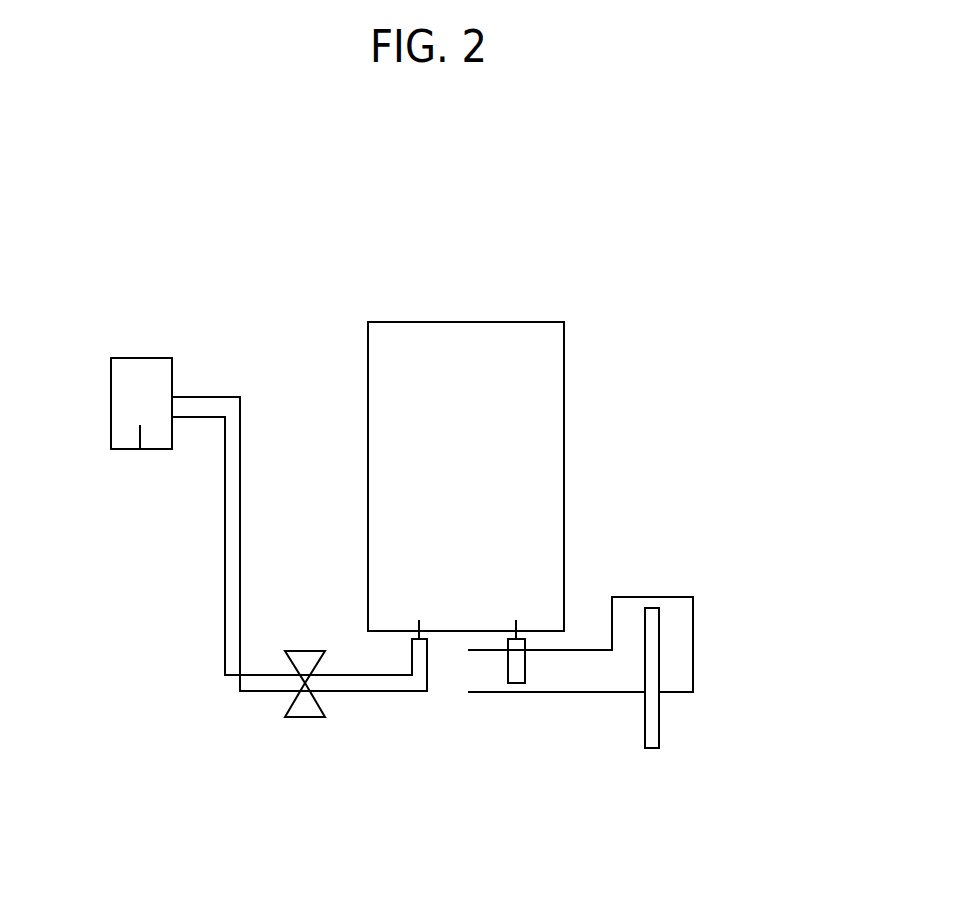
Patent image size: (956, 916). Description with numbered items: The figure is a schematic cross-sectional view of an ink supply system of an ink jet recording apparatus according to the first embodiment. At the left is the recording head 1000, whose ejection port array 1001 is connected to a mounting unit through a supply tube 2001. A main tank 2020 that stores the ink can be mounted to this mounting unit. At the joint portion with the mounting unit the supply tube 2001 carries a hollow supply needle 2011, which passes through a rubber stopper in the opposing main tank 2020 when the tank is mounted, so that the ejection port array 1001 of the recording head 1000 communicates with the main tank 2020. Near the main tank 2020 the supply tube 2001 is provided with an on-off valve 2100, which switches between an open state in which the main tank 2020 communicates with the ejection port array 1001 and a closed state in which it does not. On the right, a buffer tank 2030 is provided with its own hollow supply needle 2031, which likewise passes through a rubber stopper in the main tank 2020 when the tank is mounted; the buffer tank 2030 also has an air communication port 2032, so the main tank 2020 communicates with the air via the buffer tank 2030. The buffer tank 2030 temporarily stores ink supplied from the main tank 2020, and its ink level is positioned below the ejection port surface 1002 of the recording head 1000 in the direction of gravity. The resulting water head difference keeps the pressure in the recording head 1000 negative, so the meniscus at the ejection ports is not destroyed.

The recording head 1000 is at (138, 357).
The ejection port array 1001 is at (138, 449).
The ejection port surface 1002 is at (118, 449).
The supply tube 2001 is at (225, 652).
The supply needle 2011 is at (418, 622).
The main tank 2020 is at (533, 322).
The buffer tank 2030 is at (693, 660).
The supply needle 2031 is at (517, 622).
The air communication port 2032 is at (659, 737).
The on-off valve 2100 is at (306, 717).